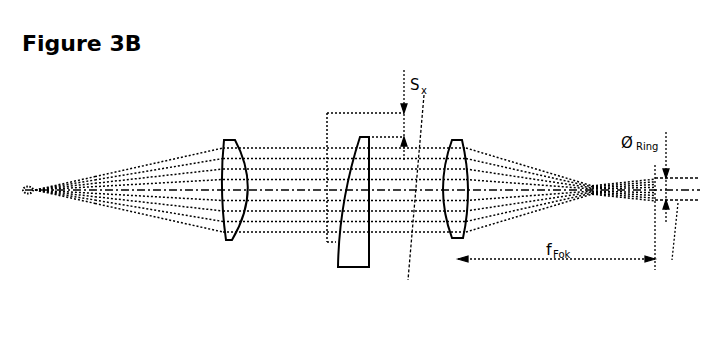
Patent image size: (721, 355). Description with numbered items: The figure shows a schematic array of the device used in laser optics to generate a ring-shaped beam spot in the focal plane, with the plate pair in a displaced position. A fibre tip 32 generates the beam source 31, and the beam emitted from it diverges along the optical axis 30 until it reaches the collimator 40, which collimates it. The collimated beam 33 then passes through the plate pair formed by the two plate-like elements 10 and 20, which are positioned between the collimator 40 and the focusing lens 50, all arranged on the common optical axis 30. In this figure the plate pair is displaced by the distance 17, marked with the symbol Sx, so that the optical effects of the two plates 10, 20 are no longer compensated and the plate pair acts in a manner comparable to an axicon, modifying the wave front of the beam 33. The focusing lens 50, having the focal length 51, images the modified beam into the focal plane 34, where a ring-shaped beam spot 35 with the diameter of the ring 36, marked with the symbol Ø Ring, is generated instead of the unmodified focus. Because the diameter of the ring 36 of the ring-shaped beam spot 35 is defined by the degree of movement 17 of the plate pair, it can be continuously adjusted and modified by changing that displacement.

The fibre tip 32 is at (28, 197).
The beam source 31 is at (42, 197).
The optical axis 30 is at (193, 195).
The collimator 40 is at (230, 241).
The collimated beam 33 is at (292, 233).
The plate-like element 10 is at (355, 115).
The plate-like element 20 is at (355, 267).
The distance 17 is at (408, 280).
The focusing lens 50 is at (452, 242).
The focal length 51 is at (553, 260).
The ring-shaped beam spot 35 is at (640, 205).
The focal plane 34 is at (655, 270).
The diameter of the ring 36 is at (672, 260).